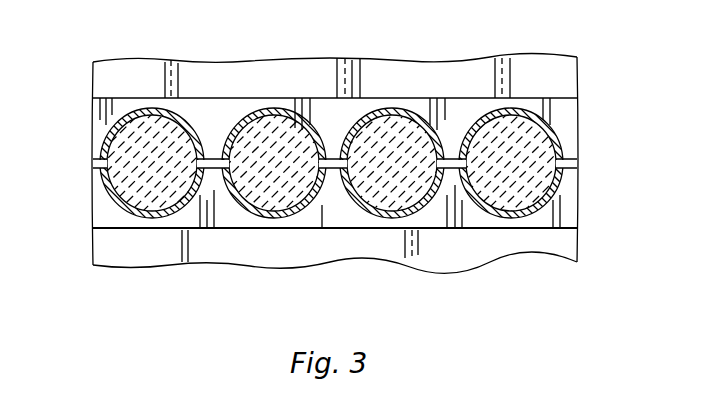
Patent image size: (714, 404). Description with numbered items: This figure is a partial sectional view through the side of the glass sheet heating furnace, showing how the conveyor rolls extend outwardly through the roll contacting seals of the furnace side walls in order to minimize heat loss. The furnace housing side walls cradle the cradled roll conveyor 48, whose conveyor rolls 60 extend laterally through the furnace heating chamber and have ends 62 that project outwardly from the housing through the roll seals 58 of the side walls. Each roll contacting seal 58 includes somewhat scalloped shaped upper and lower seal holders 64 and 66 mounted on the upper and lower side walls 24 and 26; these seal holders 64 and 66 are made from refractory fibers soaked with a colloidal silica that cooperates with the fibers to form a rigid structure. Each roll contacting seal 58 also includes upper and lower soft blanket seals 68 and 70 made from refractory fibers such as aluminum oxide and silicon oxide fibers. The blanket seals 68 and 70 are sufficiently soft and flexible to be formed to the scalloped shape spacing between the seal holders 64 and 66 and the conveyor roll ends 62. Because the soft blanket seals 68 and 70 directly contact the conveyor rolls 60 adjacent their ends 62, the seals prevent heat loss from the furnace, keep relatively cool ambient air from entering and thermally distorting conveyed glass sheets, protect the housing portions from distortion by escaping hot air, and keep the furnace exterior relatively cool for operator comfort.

The upper side wall 24 is at (390, 62).
The lower side wall 26 is at (368, 250).
The cradled roll conveyor 48 is at (113, 130).
The roll contacting seal 58 is at (584, 158).
The conveyor roll 60 is at (190, 138).
The conveyor roll end 62 is at (260, 202).
The upper seal holder 64 is at (338, 107).
The lower seal holder 66 is at (348, 218).
The upper soft blanket seal 68 is at (285, 120).
The lower soft blanket seal 70 is at (277, 220).